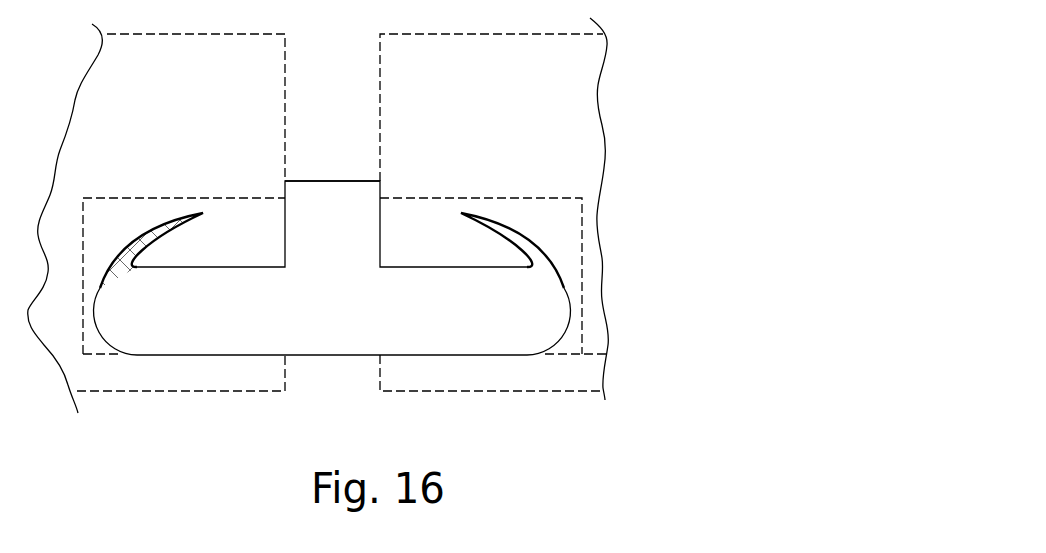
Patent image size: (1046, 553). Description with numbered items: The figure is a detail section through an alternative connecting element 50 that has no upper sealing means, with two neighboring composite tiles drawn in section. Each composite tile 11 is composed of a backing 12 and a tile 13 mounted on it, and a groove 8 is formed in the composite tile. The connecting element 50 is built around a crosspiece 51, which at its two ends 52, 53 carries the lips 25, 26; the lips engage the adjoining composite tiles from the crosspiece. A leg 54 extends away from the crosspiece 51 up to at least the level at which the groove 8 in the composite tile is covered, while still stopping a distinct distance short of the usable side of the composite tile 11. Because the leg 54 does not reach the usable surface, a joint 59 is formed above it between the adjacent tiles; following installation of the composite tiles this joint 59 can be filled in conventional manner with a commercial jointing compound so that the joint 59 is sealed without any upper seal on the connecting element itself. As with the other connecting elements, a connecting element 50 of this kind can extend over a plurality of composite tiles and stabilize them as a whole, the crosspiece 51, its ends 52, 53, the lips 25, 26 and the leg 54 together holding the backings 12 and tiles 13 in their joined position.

The groove 8 is at (550, 222).
The composite tile 11 is at (617, 140).
The backing 12 is at (592, 380).
The tile 13 is at (572, 78).
The lip 25 is at (503, 222).
The lip 26 is at (160, 233).
The connecting element 50 is at (340, 274).
The crosspiece 51 is at (208, 332).
The end of crosspiece 52 is at (538, 330).
The end of crosspiece 53 is at (122, 332).
The leg 54 is at (295, 212).
The joint 59 is at (377, 105).